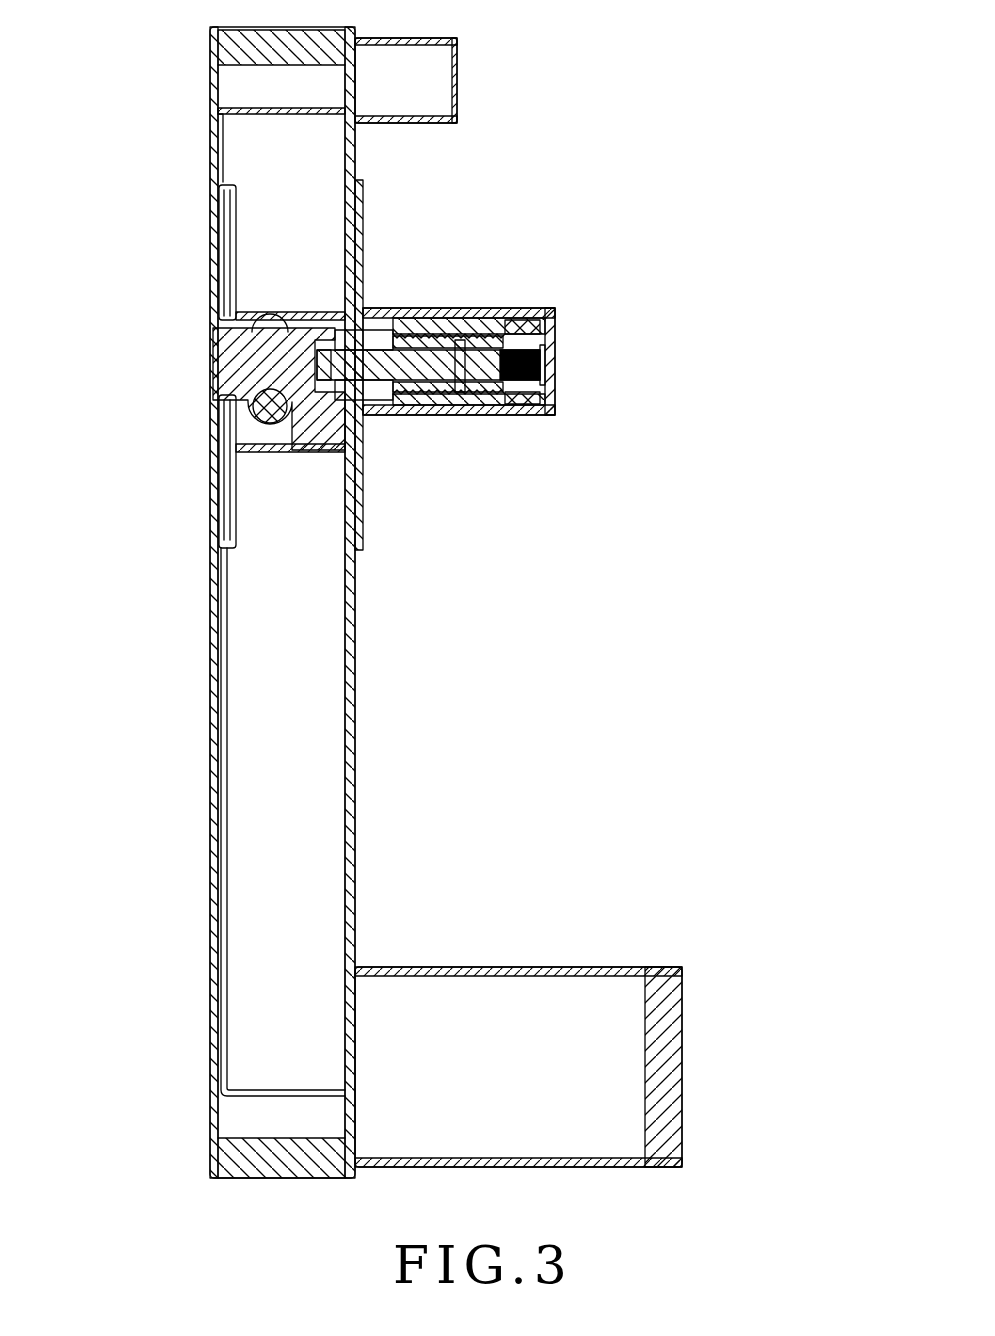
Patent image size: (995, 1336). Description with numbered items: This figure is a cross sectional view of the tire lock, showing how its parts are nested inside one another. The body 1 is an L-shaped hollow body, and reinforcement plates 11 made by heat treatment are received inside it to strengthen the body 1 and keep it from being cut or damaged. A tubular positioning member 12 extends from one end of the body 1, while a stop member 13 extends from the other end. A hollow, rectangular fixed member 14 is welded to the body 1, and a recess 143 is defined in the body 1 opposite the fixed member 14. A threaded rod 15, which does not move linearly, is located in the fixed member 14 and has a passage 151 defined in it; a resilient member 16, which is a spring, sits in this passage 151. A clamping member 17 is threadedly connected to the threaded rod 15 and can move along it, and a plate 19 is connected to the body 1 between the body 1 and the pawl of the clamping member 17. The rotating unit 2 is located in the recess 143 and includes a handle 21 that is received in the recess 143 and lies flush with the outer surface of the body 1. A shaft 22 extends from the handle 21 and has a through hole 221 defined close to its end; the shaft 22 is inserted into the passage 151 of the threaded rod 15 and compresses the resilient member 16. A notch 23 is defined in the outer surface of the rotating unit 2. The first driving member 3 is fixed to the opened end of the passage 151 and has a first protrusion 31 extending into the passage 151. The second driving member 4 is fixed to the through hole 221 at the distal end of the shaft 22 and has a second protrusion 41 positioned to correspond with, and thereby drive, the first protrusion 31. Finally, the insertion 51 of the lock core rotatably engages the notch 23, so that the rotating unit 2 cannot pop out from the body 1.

The body 1 is at (212, 672).
The reinforcement plates 11 is at (212, 168).
The tubular positioning member 12 is at (462, 41).
The stop member 13 is at (562, 967).
The fixed member 14 is at (372, 308).
The recess 143 is at (225, 325).
The threaded rod 15 is at (443, 308).
The passage 151 is at (417, 308).
The resilient member 16 is at (556, 325).
The clamping member 17 is at (530, 308).
The plate 19 is at (360, 181).
The rotating unit 2 is at (293, 368).
The handle 21 is at (212, 478).
The shaft 22 is at (545, 420).
The through hole 221 is at (512, 416).
The notch 23 is at (252, 386).
The first driving member 3 is at (400, 415).
The first protrusion 31 is at (440, 415).
The second driving member 4 is at (475, 308).
The second protrusion 41 is at (480, 415).
The insertion 51 is at (252, 410).